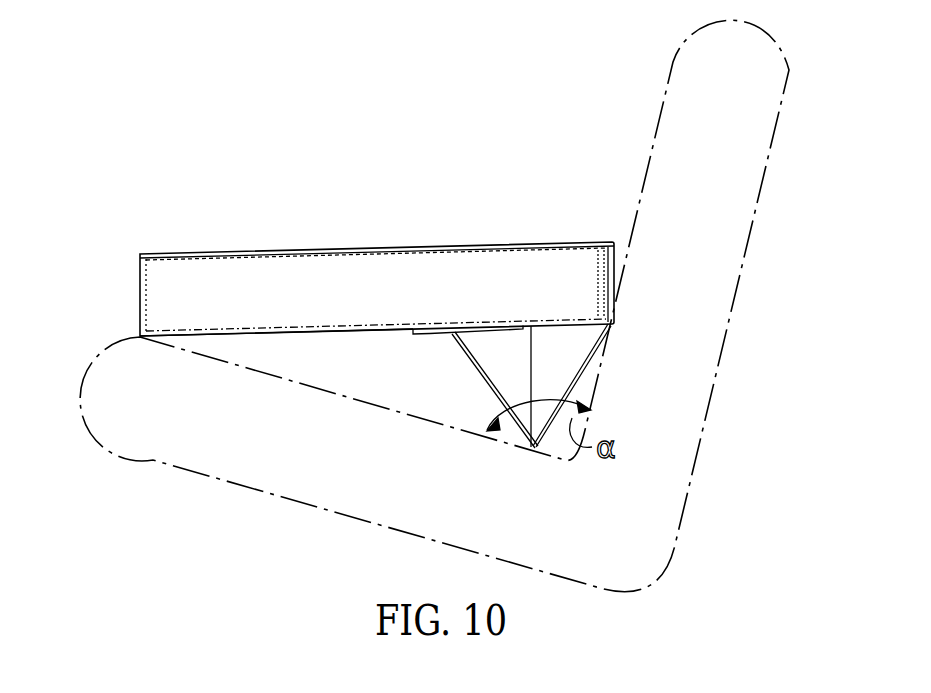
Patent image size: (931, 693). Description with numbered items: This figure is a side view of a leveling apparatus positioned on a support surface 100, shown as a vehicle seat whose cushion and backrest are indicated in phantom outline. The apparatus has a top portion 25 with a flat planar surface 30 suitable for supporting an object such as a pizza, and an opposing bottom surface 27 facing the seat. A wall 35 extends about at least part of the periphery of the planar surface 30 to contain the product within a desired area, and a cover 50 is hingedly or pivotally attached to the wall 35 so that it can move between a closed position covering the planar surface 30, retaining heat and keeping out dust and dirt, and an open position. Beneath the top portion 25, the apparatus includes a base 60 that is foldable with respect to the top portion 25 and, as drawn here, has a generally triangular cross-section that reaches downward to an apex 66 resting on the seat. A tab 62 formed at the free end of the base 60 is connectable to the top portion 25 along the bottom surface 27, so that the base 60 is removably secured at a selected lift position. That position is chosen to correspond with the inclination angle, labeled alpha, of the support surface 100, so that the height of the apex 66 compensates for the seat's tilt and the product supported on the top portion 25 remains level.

The top portion 25 is at (210, 334).
The bottom surface 27 is at (293, 330).
The planar surface 30 is at (425, 327).
The wall 35 is at (139, 291).
The cover 50 is at (400, 247).
The base 60 is at (493, 389).
The tab 62 is at (440, 334).
The apex 66 is at (533, 353).
The support surface 100 is at (272, 373).